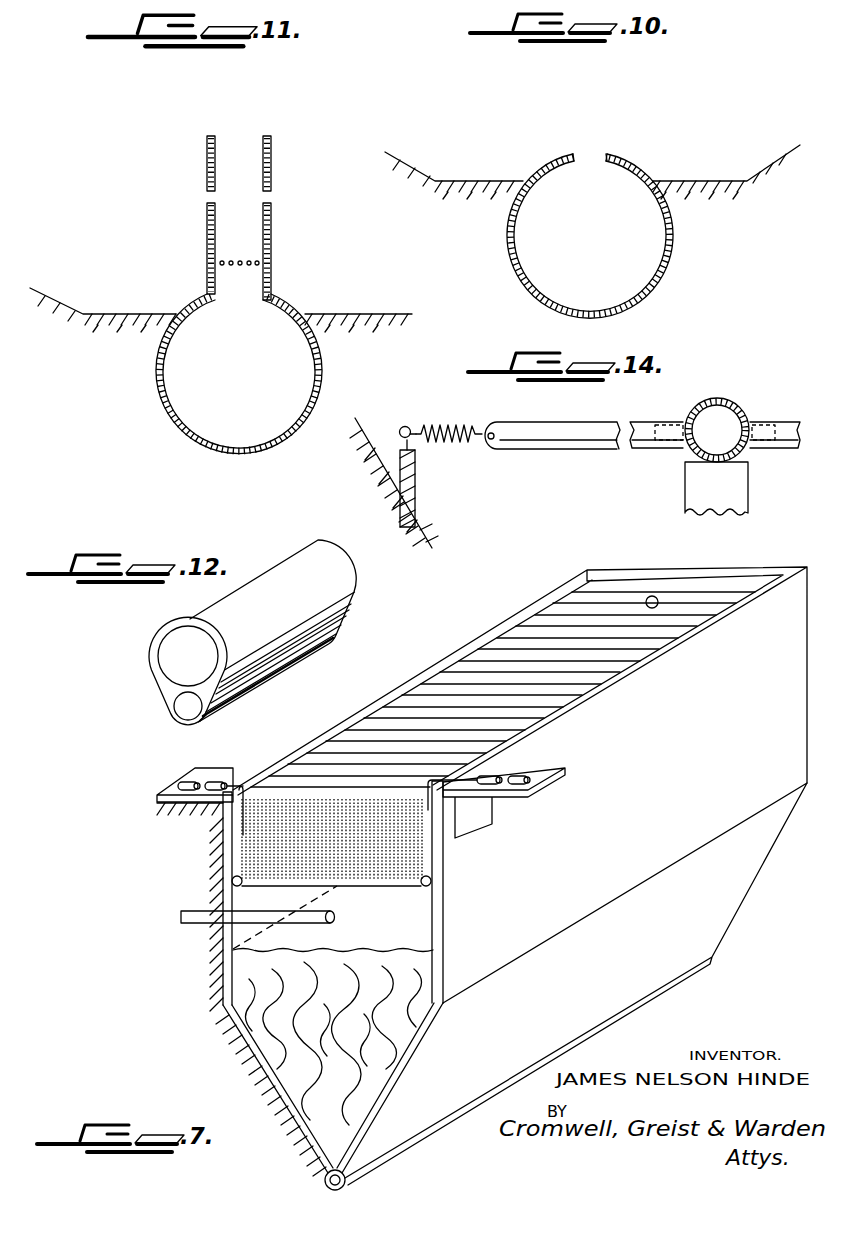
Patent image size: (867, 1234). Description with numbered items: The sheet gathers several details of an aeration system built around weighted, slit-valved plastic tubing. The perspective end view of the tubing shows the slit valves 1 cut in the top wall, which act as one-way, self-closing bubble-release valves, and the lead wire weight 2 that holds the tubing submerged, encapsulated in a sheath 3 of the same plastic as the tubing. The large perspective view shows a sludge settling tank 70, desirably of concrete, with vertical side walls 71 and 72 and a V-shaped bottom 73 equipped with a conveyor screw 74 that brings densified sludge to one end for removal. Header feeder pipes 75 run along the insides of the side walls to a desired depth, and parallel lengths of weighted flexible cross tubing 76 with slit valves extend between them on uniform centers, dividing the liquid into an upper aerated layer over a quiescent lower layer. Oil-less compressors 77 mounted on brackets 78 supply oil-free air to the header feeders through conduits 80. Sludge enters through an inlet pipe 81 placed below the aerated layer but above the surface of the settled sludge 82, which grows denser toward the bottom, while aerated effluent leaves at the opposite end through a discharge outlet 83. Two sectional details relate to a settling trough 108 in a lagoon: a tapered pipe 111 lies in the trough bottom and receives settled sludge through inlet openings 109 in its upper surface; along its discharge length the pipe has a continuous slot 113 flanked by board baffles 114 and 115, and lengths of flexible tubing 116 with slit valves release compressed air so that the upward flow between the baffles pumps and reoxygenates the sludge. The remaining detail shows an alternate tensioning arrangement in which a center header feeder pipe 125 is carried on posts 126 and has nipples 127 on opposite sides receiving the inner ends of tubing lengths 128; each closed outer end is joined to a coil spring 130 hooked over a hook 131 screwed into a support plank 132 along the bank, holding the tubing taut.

In FIG. 12, the slit valves 1 is at (297, 555).
In FIG. 12, the lead wire weight 2 is at (178, 710).
In FIG. 12, the sheath 3 is at (212, 712).
In FIG. 7, the sludge settling tank 70 is at (527, 593).
In FIG. 7, the vertical side wall 71 is at (223, 870).
In FIG. 7, the vertical side wall 72 is at (443, 904).
In FIG. 7, the V-shaped bottom 73 is at (262, 1068).
In FIG. 7, the conveyor screw 74 is at (324, 1180).
In FIG. 7, the header feeder pipes 75 is at (242, 886).
In FIG. 7, the cross tubing 76 is at (332, 886).
In FIG. 7, the oil-less compressors 77 is at (203, 782).
In FIG. 7, the brackets 78 is at (157, 800).
In FIG. 7, the conduits 80 is at (246, 788).
In FIG. 7, the inlet pipe 81 is at (316, 923).
In FIG. 7, the settled sludge 82 is at (240, 987).
In FIG. 7, the discharge outlet 83 is at (657, 597).
In FIG. 10, the settling trough 108 is at (705, 178).
In FIG. 10, the inlet openings 109 is at (605, 152).
In FIG. 10, the tapered pipe 111 is at (673, 235).
In FIG. 11, the slot 113 is at (245, 292).
In FIG. 11, the board baffle 114 is at (207, 165).
In FIG. 11, the board baffle 115 is at (271, 172).
In FIG. 11, the flexible tubing 116 is at (218, 262).
In FIG. 14, the header feeder pipe 125 is at (727, 400).
In FIG. 14, the posts 126 is at (687, 494).
In FIG. 14, the nipples 127 is at (660, 425).
In FIG. 14, the lengths of weighted flexible tubing 128 is at (588, 443).
In FIG. 14, the coil spring 130 is at (455, 423).
In FIG. 14, the hook 131 is at (404, 426).
In FIG. 14, the support plank 132 is at (415, 487).